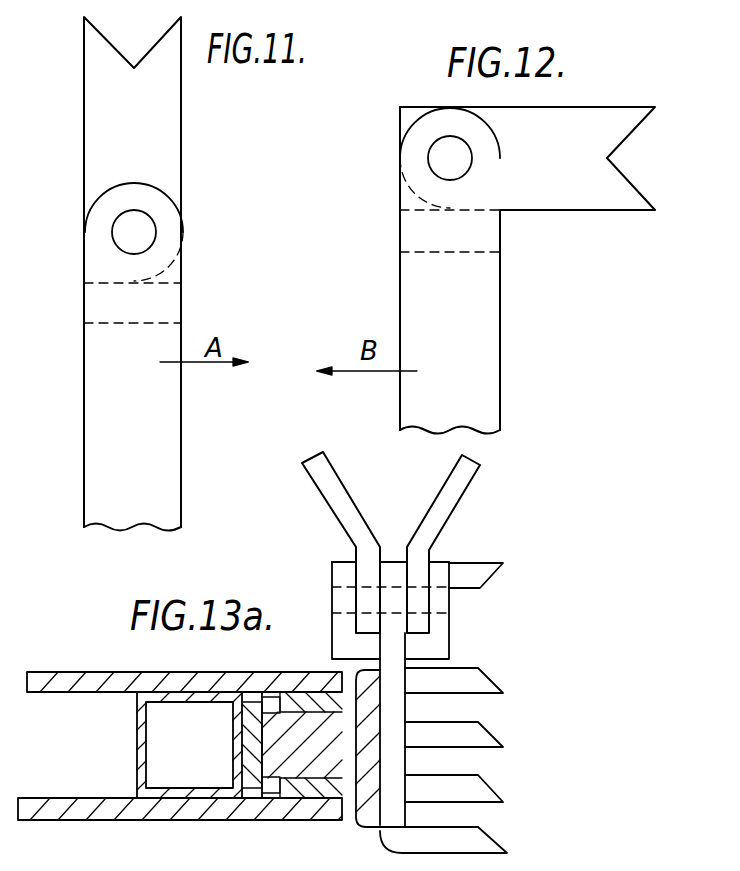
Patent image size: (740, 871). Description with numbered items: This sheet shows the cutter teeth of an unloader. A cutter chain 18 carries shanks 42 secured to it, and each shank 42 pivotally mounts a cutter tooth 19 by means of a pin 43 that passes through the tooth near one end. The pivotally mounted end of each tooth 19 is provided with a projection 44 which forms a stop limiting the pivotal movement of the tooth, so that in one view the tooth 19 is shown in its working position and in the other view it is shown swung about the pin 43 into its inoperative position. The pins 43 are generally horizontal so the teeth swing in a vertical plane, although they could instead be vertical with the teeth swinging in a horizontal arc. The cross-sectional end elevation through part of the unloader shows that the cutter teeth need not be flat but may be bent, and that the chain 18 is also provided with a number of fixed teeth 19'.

In FIG. 13A, the cutter chain 18 is at (273, 718).
In FIG. 11, the cutter tooth 19 is at (160, 272).
In FIG. 12, the cutter tooth 19 is at (527, 243).
In FIG. 13A, the cutter tooth 19 is at (387, 542).
In FIG. 13A, the fixed tooth 19' is at (494, 682).
In FIG. 11, the shank 42 is at (108, 403).
In FIG. 12, the shank 42 is at (472, 344).
In FIG. 13A, the shank 42 is at (393, 683).
In FIG. 11, the pin 43 is at (140, 236).
In FIG. 12, the pin 43 is at (436, 156).
In FIG. 13A, the pin 43 is at (341, 601).
In FIG. 12, the projection 44 is at (400, 107).